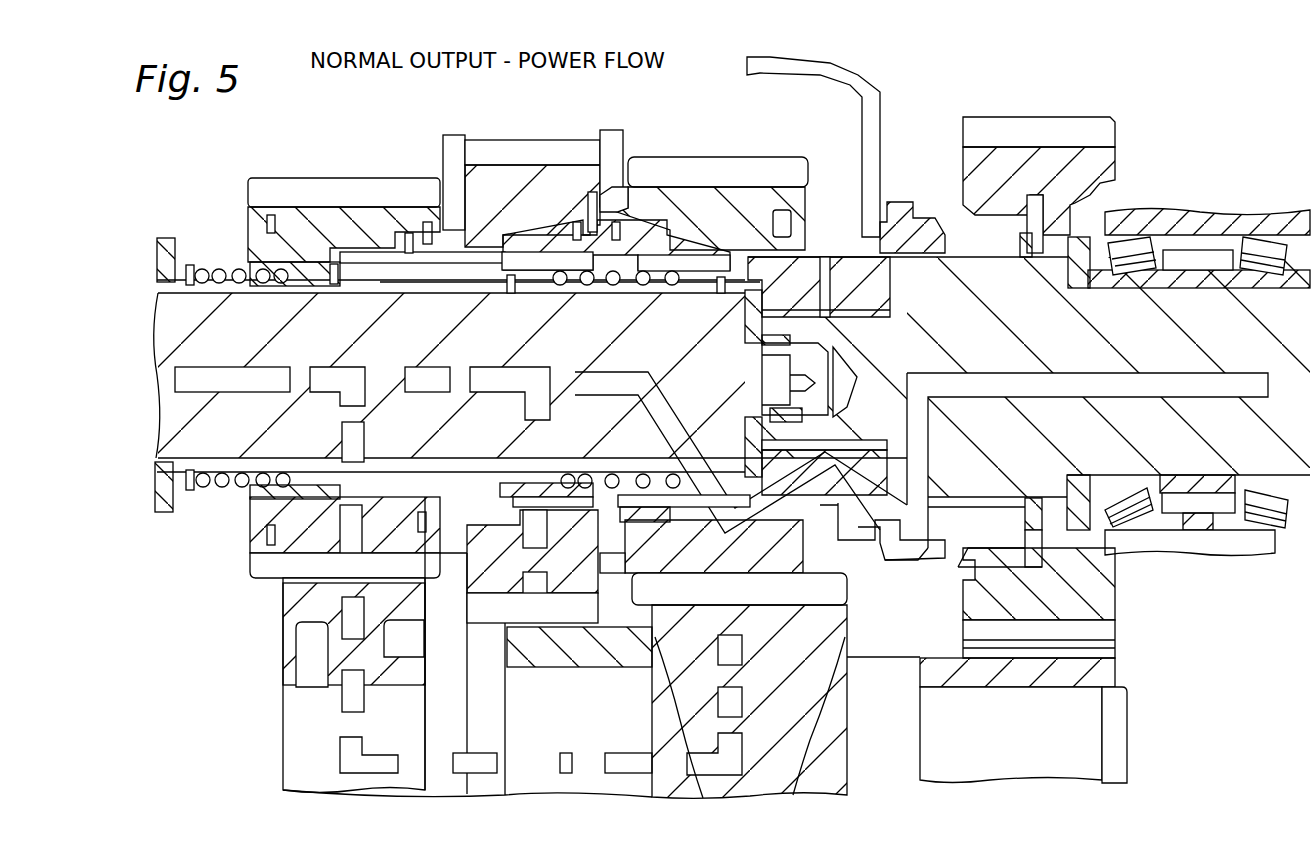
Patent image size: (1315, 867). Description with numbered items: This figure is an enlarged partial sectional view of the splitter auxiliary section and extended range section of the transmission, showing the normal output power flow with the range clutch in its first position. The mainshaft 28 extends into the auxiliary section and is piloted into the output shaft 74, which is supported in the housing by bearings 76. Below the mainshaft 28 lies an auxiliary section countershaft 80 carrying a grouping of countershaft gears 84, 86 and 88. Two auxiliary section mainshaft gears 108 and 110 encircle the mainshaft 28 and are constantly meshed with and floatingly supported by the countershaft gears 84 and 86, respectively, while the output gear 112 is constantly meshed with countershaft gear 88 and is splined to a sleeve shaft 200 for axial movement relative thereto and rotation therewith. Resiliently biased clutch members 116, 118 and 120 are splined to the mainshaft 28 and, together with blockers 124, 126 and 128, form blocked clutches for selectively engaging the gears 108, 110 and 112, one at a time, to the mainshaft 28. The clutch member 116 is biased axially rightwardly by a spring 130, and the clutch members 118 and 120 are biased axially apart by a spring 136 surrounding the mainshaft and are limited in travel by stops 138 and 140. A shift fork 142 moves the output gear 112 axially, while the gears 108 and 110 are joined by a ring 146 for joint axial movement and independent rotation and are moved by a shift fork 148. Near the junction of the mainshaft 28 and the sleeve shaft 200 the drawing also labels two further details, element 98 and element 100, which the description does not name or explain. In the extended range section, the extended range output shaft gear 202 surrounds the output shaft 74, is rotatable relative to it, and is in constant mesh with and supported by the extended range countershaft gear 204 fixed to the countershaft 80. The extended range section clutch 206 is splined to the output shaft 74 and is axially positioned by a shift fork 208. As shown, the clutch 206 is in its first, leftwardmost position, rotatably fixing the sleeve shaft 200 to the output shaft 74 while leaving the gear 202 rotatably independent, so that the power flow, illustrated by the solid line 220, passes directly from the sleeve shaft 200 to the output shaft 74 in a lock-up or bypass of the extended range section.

The mainshaft 28 is at (247, 328).
The output shaft 74 is at (1273, 540).
The bearings 76 is at (1192, 260).
The auxiliary section countershaft 80 is at (992, 734).
The countershaft gear 84 is at (318, 607).
The countershaft gear 86 is at (607, 618).
The countershaft gear 88 is at (825, 590).
The spring 98 is at (817, 362).
The detent ball 100 is at (853, 373).
The auxiliary section mainshaft gear 108 is at (262, 195).
The auxiliary section mainshaft gear 110 is at (488, 155).
The output gear 112 is at (695, 168).
The clutch member 116 is at (303, 270).
The clutch member 118 is at (533, 253).
The clutch member 120 is at (693, 273).
The blocker 124 is at (258, 568).
The blocker 126 is at (557, 240).
The blocker 128 is at (627, 240).
The spring 130 is at (240, 483).
The spring 136 is at (613, 473).
The stop 138 is at (509, 283).
The stop 140 is at (723, 290).
The shift fork 142 is at (613, 147).
The ring 146 is at (427, 247).
The shift fork 148 is at (450, 173).
The sleeve shaft 200 is at (872, 292).
The extended range output shaft gear 202 is at (1008, 128).
The extended range countershaft gear 204 is at (1078, 672).
The extended range section clutch 206 is at (898, 228).
The shift fork 208 is at (863, 90).
The solid line 220 is at (1012, 388).